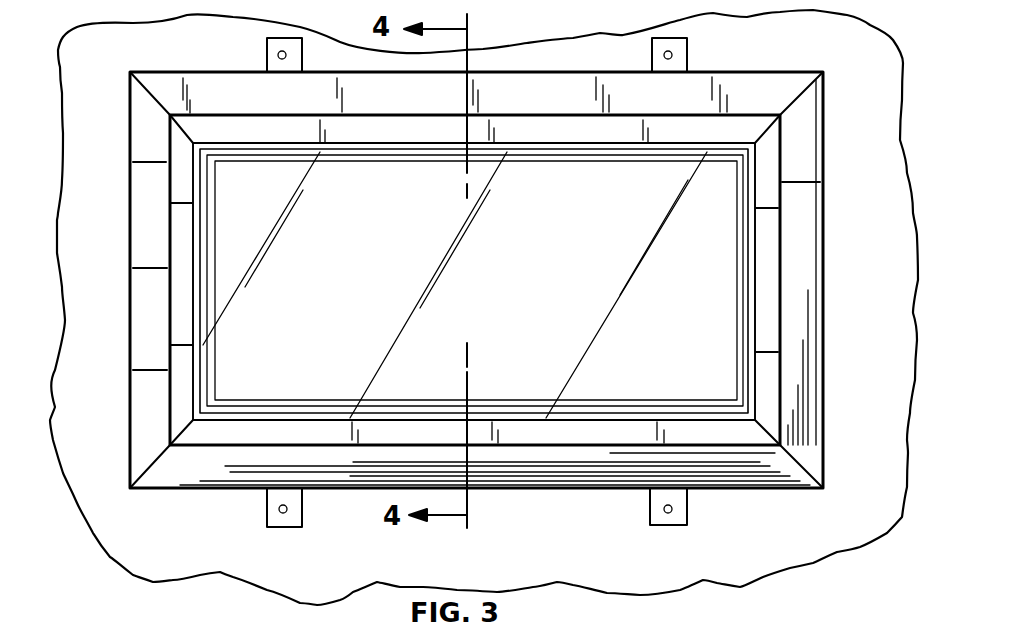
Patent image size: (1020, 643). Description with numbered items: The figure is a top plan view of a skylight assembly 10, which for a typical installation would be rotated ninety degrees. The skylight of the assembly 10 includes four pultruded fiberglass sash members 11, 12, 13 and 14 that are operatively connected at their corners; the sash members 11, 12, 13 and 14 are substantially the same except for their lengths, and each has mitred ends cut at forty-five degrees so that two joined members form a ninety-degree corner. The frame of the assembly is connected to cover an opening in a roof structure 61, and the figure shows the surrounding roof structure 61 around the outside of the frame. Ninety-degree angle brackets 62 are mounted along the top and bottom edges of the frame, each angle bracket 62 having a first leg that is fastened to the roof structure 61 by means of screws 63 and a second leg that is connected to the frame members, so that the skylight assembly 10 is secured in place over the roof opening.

The skylight assembly 10 is at (773, 57).
The pultruded fiberglass sash member 11 is at (560, 80).
The pultruded fiberglass sash member 12 is at (148, 226).
The pultruded fiberglass sash member 13 is at (537, 480).
The pultruded fiberglass sash member 14 is at (816, 245).
The roof structure 61 is at (426, 569).
The angle bracket 62 is at (672, 56).
The screw 63 is at (278, 55).